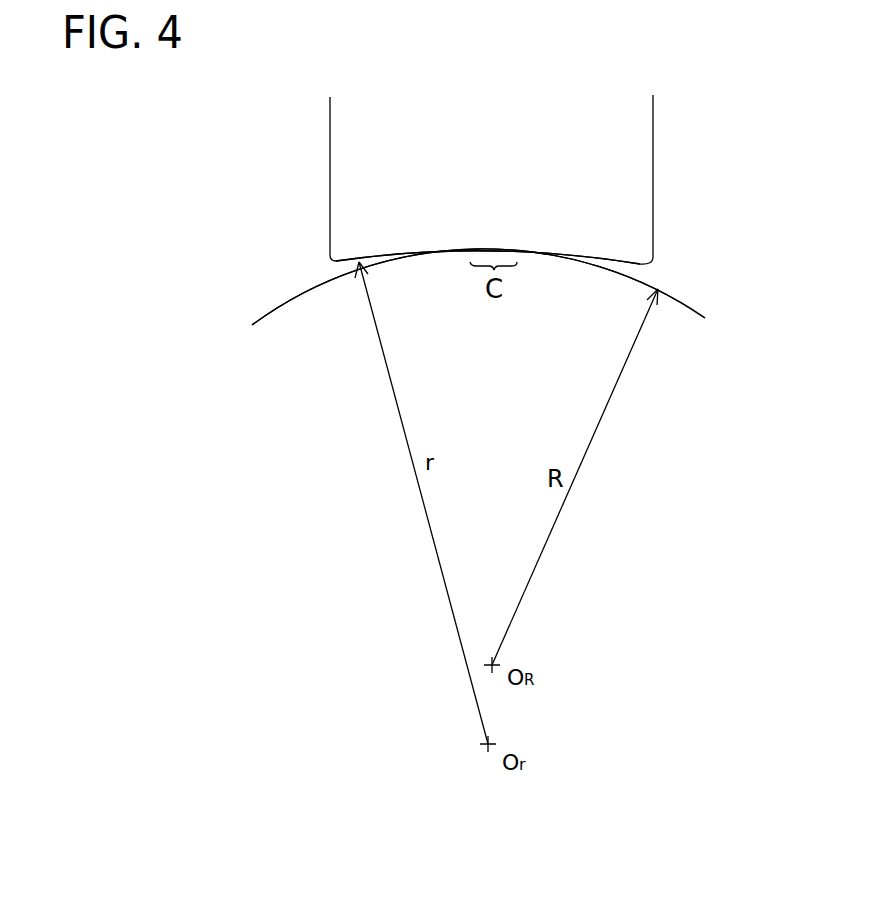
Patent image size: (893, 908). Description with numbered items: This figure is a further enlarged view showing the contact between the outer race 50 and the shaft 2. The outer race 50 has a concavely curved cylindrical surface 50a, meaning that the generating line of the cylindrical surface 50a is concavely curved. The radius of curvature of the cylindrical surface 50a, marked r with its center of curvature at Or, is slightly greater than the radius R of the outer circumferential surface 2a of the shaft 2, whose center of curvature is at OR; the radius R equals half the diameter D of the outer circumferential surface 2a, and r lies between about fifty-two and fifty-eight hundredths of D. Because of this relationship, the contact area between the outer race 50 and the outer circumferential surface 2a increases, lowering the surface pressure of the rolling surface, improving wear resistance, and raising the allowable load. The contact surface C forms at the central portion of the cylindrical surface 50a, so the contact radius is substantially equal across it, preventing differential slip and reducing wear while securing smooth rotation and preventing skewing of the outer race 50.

The shaft 2 is at (682, 313).
The outer circumferential surface 2a is at (290, 301).
The outer race 50 is at (642, 150).
The cylindrical surface 50a is at (638, 273).